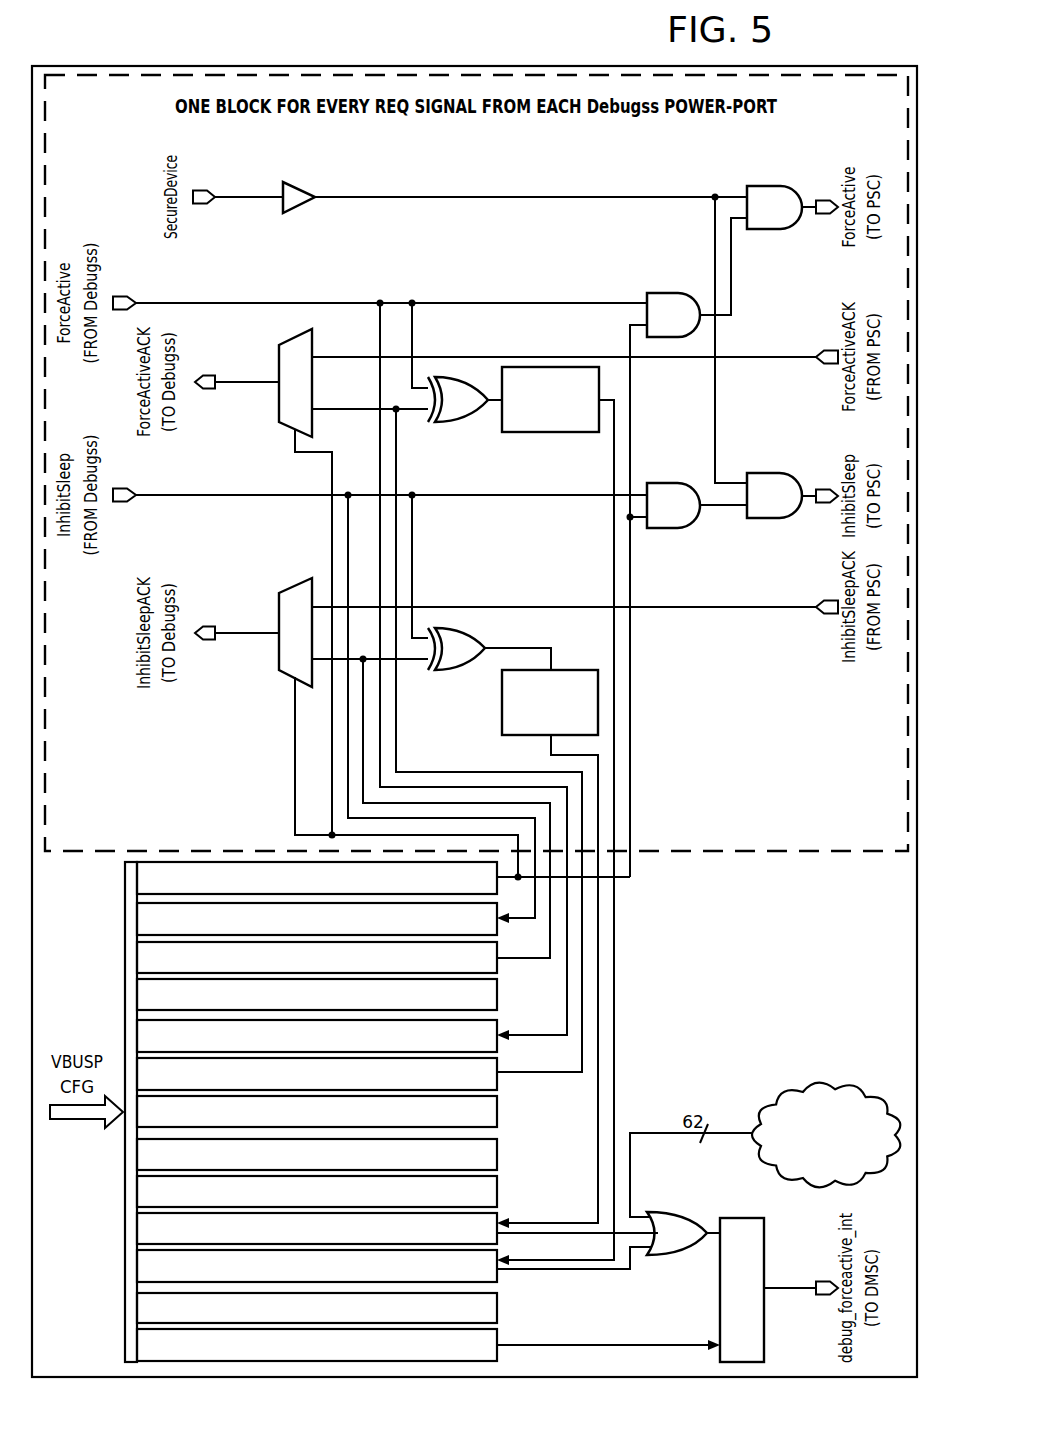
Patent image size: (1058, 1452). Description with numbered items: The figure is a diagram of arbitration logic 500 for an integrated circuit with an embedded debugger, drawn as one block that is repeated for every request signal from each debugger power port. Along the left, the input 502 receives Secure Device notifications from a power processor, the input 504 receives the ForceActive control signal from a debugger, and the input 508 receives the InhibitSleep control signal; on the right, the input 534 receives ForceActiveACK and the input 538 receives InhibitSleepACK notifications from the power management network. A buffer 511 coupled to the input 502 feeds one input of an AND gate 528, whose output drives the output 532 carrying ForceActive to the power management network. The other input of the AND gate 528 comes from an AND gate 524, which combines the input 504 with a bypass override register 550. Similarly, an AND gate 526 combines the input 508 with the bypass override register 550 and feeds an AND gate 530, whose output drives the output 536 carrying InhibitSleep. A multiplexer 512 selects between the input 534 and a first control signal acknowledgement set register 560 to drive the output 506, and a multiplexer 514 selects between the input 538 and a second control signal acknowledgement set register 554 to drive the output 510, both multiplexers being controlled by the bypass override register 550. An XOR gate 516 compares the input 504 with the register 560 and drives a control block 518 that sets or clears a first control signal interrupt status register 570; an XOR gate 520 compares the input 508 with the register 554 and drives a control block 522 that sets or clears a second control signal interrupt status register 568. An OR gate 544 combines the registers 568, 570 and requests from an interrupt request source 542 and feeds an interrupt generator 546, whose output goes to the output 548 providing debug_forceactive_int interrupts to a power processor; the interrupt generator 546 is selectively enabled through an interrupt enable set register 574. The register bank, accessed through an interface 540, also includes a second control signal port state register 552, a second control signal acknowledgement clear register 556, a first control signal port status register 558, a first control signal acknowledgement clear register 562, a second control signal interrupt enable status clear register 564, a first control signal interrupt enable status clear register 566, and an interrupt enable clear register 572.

The arbitration logic 500 is at (255, 62).
The input 502 is at (198, 190).
The input 504 is at (118, 297).
The output 506 is at (209, 391).
The input 508 is at (118, 502).
The output 510 is at (209, 642).
The buffer 511 is at (300, 186).
The multiplexer 512 is at (279, 368).
The multiplexer 514 is at (279, 618).
The XOR gate 516 is at (455, 423).
The control block 518 is at (551, 433).
The XOR gate 520 is at (455, 673).
The control block 522 is at (566, 669).
The AND gate 524 is at (668, 292).
The AND gate 526 is at (668, 482).
The AND gate 528 is at (767, 185).
The AND gate 530 is at (767, 472).
The output 532 is at (822, 199).
The input 534 is at (828, 350).
The output 536 is at (822, 488).
The input 538 is at (828, 600).
The interface 540 is at (80, 1122).
The interrupt request source 542 is at (823, 1081).
The OR gate 544 is at (672, 1256).
The interrupt generator 546 is at (764, 1265).
The output 548 is at (823, 1297).
The bypass override register 550 is at (137, 882).
The second control signal port state register 552 is at (137, 923).
The second control signal acknowledgement set register 554 is at (137, 960).
The second control signal acknowledgement clear register 556 is at (137, 988).
The first control signal port status register 558 is at (137, 1030).
The first control signal acknowledgement set register 560 is at (497, 1083).
The first control signal acknowledgement clear register 562 is at (497, 1117).
The second control signal interrupt enable status clear register 564 is at (497, 1160).
The first control signal interrupt enable status clear register 566 is at (137, 1190).
The second control signal interrupt status register 568 is at (137, 1228).
The first control signal interrupt status register 570 is at (137, 1265).
The interrupt enable clear register 572 is at (137, 1306).
The interrupt enable set register 574 is at (137, 1345).